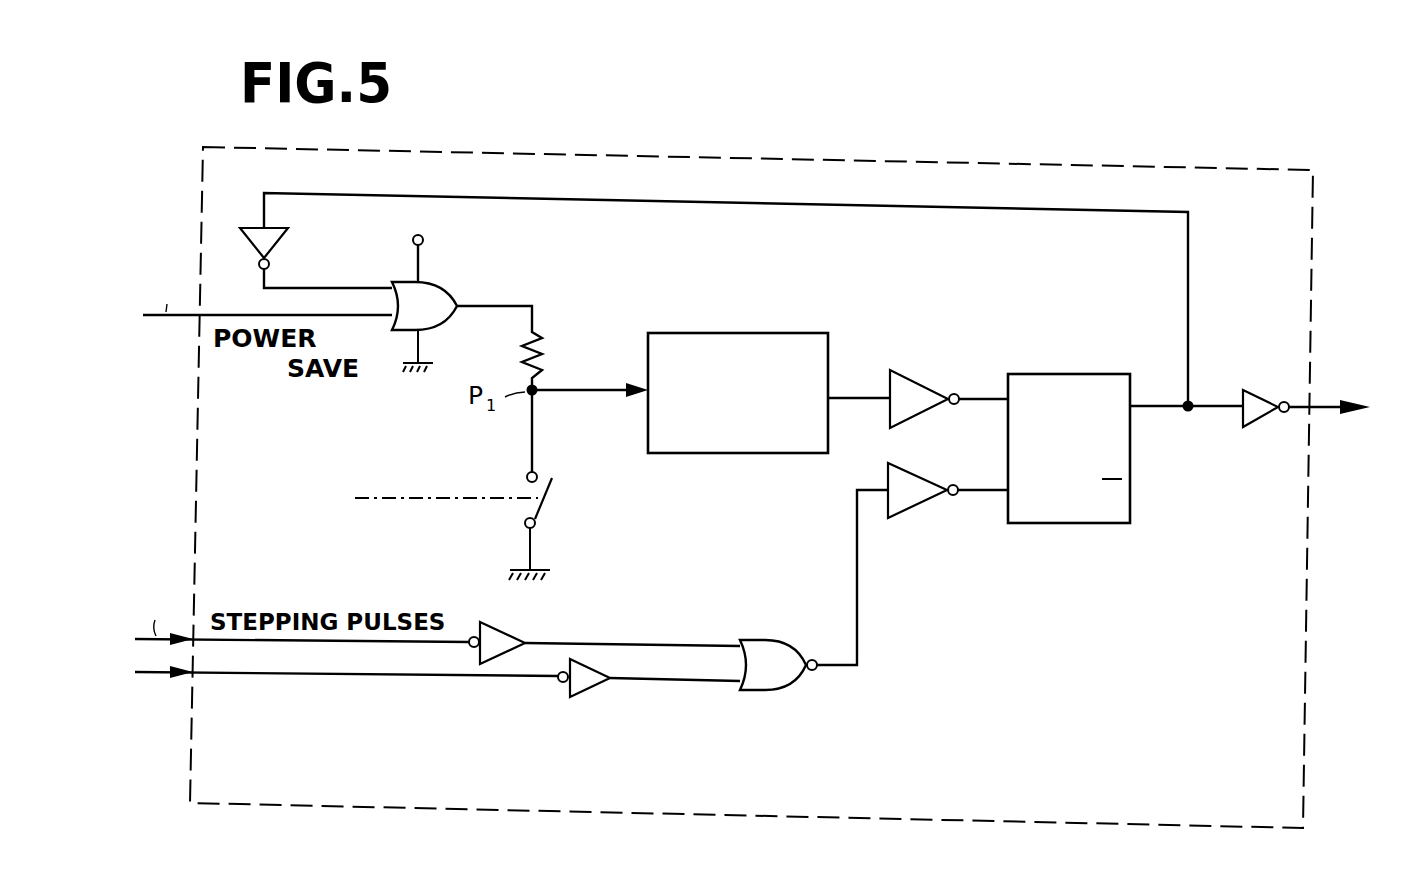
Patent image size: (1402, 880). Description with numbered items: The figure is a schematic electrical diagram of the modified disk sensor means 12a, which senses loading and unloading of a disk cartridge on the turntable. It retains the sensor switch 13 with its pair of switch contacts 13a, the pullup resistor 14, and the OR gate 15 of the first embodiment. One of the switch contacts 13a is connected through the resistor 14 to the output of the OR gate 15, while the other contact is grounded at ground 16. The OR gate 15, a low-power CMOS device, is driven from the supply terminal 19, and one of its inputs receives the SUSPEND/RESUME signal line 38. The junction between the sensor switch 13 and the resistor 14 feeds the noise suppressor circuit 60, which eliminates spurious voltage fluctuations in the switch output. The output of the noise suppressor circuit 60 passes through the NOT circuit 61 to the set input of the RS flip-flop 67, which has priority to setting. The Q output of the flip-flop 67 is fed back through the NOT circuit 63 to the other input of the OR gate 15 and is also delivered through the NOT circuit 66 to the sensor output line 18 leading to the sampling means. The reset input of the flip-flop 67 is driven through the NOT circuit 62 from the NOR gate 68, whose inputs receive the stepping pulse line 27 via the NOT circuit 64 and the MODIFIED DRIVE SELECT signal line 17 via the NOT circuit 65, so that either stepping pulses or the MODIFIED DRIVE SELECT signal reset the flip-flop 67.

The modified disk sensor means 12a is at (1315, 262).
The sensor switch 13 is at (489, 461).
The switch contacts 13a is at (514, 486).
The pullup resistor 14 is at (546, 352).
The OR gate 15 is at (450, 294).
The ground 16 is at (543, 572).
The output line 17 is at (157, 676).
The sensor output line 18 is at (1329, 404).
The supply terminal 19 is at (425, 241).
The stepping pulse line 27 is at (138, 593).
The SUSPEND/RESUME signal line 38 is at (243, 275).
The noise suppressor circuit 60 is at (735, 333).
The NOT circuit 61 is at (926, 372).
The NOT circuit 62 is at (930, 500).
The NOT circuit 63 is at (278, 236).
The NOT circuit 64 is at (510, 634).
The NOT circuit 65 is at (594, 700).
The NOT circuit 66 is at (1263, 390).
The RS flip-flop 67 is at (1060, 374).
The NOR gate 68 is at (788, 643).